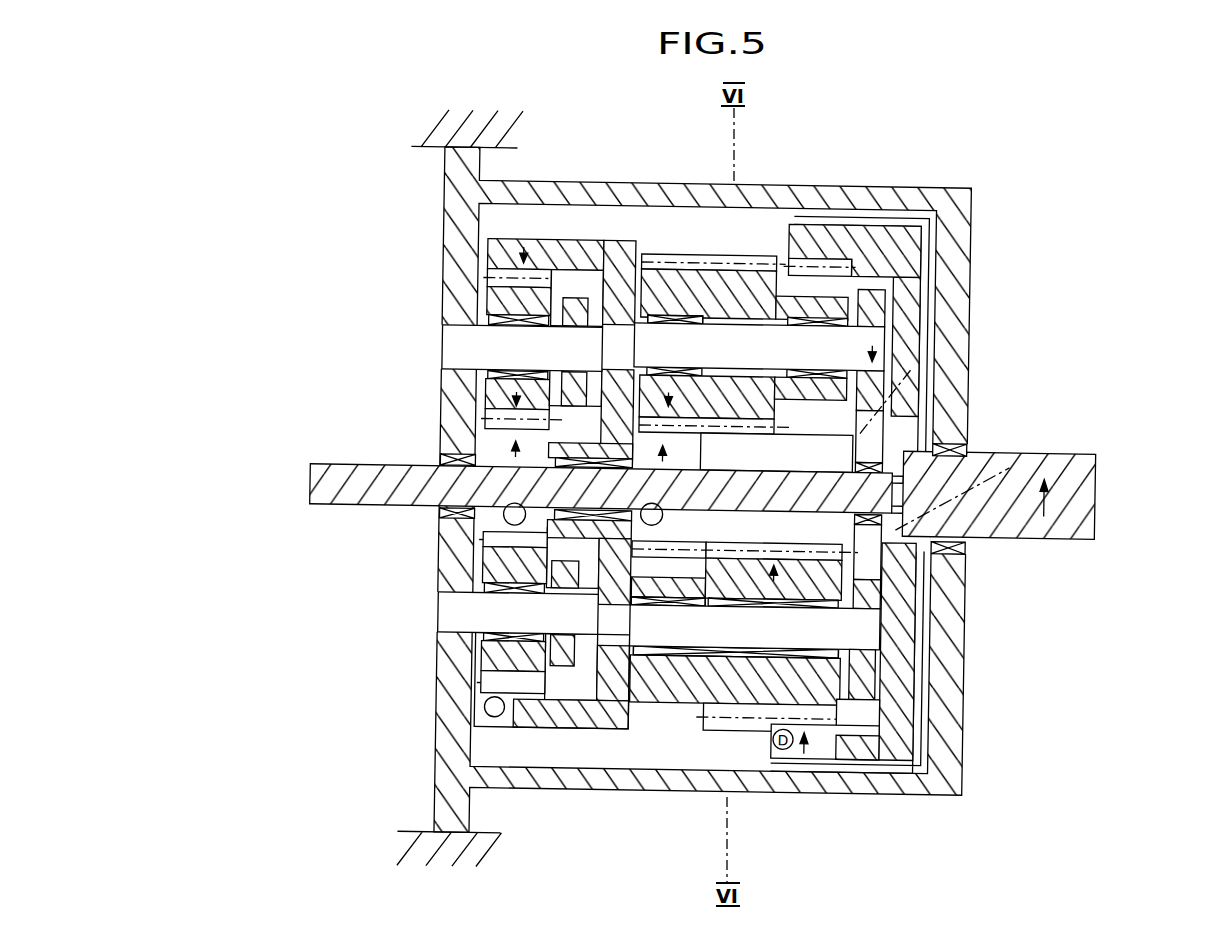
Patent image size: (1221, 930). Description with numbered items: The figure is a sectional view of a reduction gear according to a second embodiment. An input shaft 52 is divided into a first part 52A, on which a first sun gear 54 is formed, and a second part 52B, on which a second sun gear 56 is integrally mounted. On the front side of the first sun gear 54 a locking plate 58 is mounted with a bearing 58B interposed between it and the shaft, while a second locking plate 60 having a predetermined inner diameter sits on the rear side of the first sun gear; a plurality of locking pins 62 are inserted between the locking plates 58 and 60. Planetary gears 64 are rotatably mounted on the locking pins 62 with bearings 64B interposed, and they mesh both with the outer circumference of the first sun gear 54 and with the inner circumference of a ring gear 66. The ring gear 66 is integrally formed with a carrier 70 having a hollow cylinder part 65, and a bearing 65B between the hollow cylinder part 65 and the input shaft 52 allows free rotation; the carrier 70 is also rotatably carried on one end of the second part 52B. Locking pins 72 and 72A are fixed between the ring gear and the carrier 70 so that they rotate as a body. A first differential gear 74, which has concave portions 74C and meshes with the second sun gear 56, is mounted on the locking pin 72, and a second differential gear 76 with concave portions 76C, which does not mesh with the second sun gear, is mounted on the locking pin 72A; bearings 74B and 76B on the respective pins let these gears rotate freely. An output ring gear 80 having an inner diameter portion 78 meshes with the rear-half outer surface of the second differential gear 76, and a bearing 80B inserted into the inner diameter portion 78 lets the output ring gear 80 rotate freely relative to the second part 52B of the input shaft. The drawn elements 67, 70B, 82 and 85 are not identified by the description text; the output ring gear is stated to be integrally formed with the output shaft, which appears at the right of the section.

The input shaft 52 is at (305, 488).
The first part of the input shaft 52A is at (483, 491).
The second part of the input shaft 52B is at (704, 494).
The first sun gear 54 is at (498, 520).
The second sun gear 56 is at (650, 565).
The locking plate 58 is at (443, 212).
The bearing 58B is at (440, 456).
The locking plate 60 is at (505, 405).
The locking pin 62 is at (452, 612).
The planetary gear 64 is at (490, 300).
The bearing 64B is at (495, 338).
The hollow cylinder part 65 is at (574, 298).
The bearing 65B is at (556, 574).
The ring gear 66 is at (530, 712).
The carrier 67 is at (612, 245).
The carrier 70 is at (885, 392).
The carrier plate 70B is at (925, 400).
The locking pin 72 is at (870, 345).
The locking pin 72A is at (870, 632).
The first differential gear 74 is at (735, 285).
The bearing 74B is at (667, 318).
The concave portion 74C is at (890, 265).
The second differential gear 76 is at (762, 690).
The bearing 76B is at (700, 660).
The concave portion 76C is at (655, 660).
The inner diameter portion 78 is at (962, 590).
The output ring gear 80 is at (805, 750).
The bearing 80B is at (962, 546).
The output shaft 82 is at (1098, 500).
The housing cover 85 is at (905, 196).